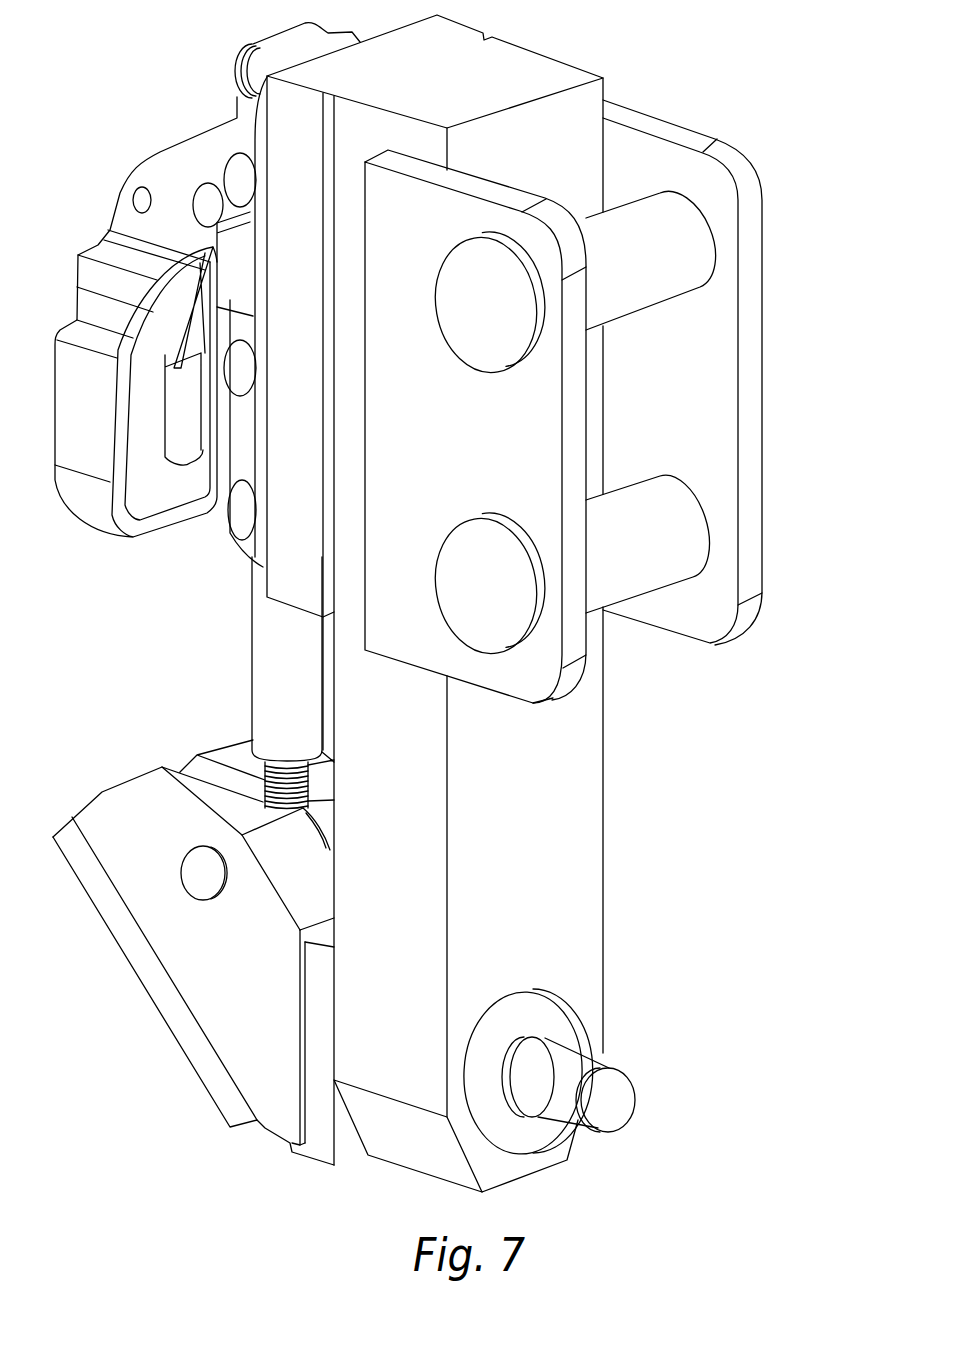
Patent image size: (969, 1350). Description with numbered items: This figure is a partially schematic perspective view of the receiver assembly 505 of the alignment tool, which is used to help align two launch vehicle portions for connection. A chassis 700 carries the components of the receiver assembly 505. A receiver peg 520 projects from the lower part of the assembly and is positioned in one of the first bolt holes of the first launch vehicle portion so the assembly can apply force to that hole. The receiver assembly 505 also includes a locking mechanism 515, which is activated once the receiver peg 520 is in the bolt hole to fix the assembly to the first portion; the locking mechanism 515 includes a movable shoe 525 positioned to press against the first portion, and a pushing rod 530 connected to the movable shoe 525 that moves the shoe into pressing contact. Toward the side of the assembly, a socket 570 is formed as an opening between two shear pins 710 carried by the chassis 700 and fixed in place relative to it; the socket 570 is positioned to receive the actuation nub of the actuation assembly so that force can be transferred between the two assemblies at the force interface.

The receiver assembly 505 is at (712, 105).
The locking mechanism 515 is at (122, 72).
The receiver peg 520 is at (575, 1068).
The movable shoe 525 is at (222, 990).
The pushing rod 530 is at (283, 668).
The socket 570 is at (652, 420).
The chassis 700 is at (340, 1008).
The shear pins 710 is at (670, 280).